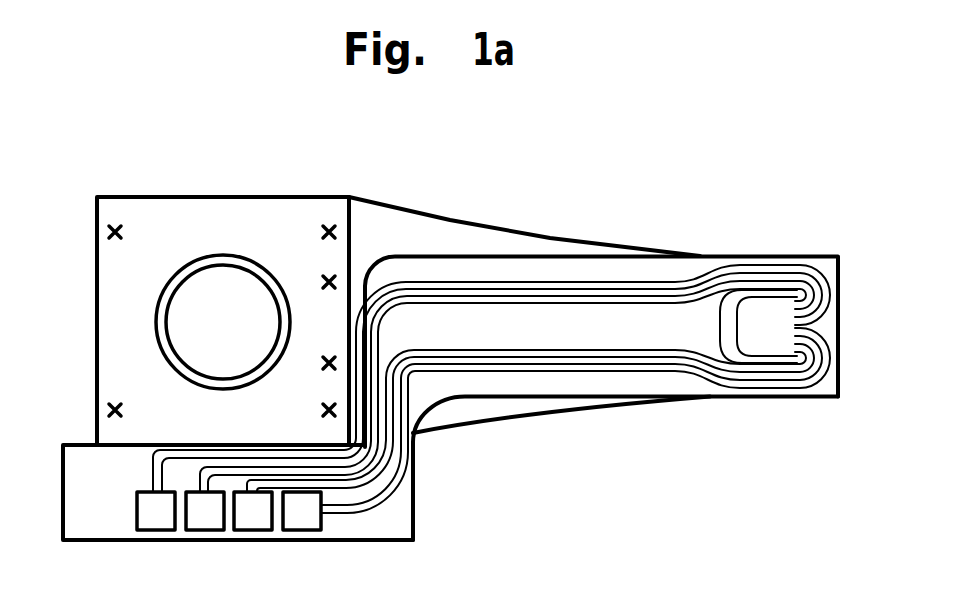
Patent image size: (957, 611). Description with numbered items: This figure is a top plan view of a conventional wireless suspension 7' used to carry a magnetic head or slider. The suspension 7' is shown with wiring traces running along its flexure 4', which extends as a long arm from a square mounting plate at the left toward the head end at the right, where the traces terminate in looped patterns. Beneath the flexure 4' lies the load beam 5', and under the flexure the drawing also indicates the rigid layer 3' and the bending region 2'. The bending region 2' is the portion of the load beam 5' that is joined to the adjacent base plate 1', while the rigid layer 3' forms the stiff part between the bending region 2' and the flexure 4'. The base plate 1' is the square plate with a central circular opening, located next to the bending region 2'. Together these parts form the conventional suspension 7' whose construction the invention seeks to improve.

The base plate 1' is at (223, 269).
The bending region 2' is at (524, 183).
The rigid layer 3' is at (561, 450).
The flexure 4' is at (601, 297).
The load beam 5' is at (625, 469).
The wireless suspension 7' is at (446, 435).